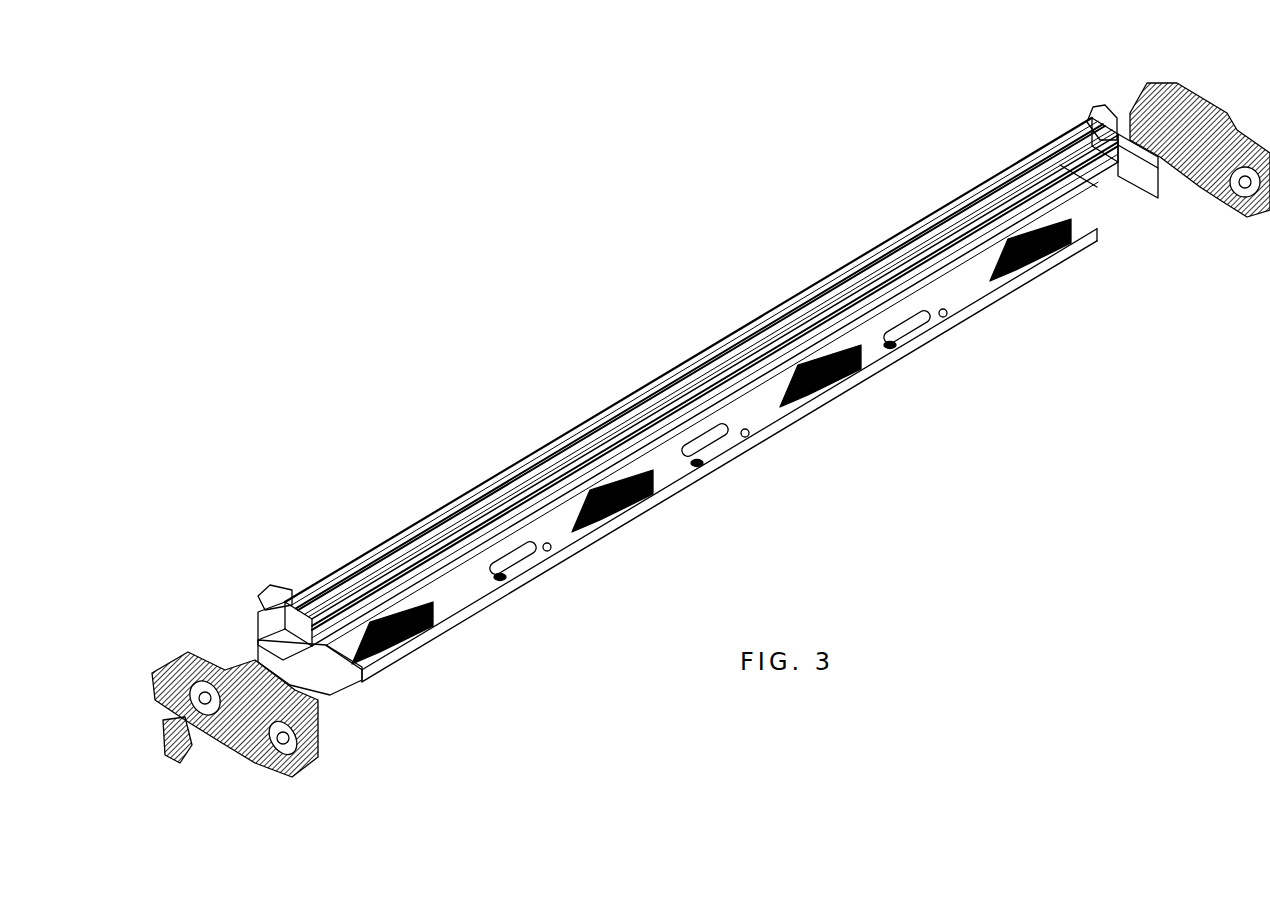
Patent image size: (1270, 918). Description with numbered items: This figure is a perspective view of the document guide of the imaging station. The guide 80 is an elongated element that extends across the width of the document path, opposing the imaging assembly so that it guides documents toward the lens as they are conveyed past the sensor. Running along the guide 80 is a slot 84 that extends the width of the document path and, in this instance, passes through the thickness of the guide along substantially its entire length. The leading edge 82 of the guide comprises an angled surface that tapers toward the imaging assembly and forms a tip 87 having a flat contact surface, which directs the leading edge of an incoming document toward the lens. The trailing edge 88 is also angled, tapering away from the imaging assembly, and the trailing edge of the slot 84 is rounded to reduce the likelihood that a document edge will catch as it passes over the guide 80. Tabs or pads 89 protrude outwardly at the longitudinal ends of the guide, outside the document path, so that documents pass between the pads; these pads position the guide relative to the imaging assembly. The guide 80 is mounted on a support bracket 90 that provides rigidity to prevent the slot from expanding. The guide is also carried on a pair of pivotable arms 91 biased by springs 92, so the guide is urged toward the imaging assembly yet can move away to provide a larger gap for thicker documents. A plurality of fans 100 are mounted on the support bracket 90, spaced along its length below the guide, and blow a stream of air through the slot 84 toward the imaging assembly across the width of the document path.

The guide 80 is at (490, 483).
The leading edge 82 is at (558, 553).
The slot 84 is at (607, 413).
The tip 87 is at (360, 583).
The trailing edge 88 is at (737, 337).
The pads 89 is at (290, 603).
The support bracket 90 is at (327, 673).
The pivotable arms 91 is at (318, 757).
The springs 92 is at (178, 760).
The fans 100 is at (447, 633).